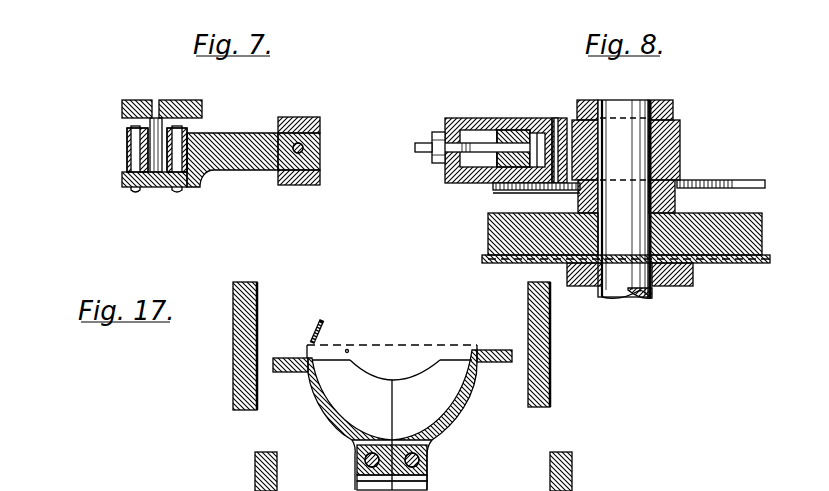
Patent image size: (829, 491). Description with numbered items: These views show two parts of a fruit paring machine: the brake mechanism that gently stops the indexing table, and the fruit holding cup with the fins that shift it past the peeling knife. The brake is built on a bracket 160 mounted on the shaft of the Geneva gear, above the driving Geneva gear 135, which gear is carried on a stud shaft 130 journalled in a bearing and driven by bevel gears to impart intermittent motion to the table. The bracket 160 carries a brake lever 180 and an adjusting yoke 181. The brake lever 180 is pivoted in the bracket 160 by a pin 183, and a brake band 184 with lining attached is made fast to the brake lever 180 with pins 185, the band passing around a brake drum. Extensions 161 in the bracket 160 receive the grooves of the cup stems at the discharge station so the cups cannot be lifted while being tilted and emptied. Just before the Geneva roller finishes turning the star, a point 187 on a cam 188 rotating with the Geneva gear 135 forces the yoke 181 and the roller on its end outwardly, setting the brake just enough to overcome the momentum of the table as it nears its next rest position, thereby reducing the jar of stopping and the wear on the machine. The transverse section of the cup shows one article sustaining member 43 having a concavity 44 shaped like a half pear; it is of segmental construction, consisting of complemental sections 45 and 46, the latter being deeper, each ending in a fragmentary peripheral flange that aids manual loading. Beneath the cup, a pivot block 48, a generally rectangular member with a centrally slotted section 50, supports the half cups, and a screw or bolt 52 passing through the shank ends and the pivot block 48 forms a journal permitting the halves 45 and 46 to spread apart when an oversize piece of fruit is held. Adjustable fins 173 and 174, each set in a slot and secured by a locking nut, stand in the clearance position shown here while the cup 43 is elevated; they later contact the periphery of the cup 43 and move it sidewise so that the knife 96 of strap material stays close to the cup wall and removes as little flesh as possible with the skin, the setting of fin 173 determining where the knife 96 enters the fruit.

In FIG. 7, the bracket 160 is at (155, 133).
In FIG. 8, the bracket 160 is at (686, 80).
In FIG. 7, the pin 183 is at (175, 119).
In FIG. 7, the brake band 184 is at (126, 155).
In FIG. 7, the pins 185 is at (176, 160).
In FIG. 7, the brake lever 180 is at (264, 162).
In FIG. 7, the adjusting yoke 181 is at (337, 96).
In FIG. 8, the adjusting yoke 181 is at (516, 104).
In FIG. 8, the cam 188 is at (565, 134).
In FIG. 8, the extensions 161 is at (498, 189).
In FIG. 8, the point 187 is at (682, 128).
In FIG. 8, the stud shaft 130 is at (632, 167).
In FIG. 8, the driving Geneva gear 135 is at (493, 231).
In FIG. 17, the fin 173 is at (233, 396).
In FIG. 17, the fin 174 is at (551, 366).
In FIG. 17, the article sustaining member 43 is at (288, 349).
In FIG. 17, the knife 96 is at (335, 318).
In FIG. 17, the complemental section 45 is at (318, 405).
In FIG. 17, the complemental section 46 is at (468, 414).
In FIG. 17, the concavity 44 is at (358, 421).
In FIG. 17, the screw or bolt 52 is at (410, 453).
In FIG. 17, the pivot block 48 is at (357, 478).
In FIG. 17, the centrally slotted section 50 is at (426, 488).